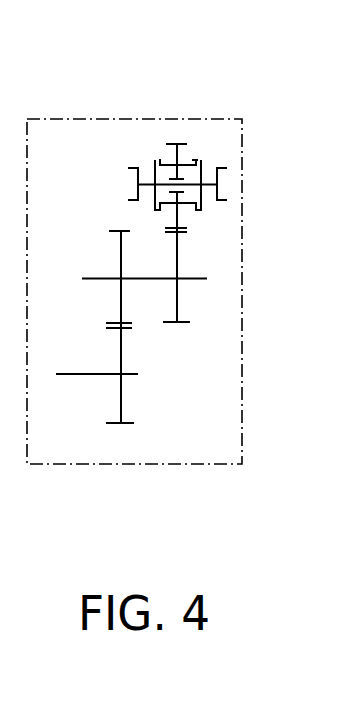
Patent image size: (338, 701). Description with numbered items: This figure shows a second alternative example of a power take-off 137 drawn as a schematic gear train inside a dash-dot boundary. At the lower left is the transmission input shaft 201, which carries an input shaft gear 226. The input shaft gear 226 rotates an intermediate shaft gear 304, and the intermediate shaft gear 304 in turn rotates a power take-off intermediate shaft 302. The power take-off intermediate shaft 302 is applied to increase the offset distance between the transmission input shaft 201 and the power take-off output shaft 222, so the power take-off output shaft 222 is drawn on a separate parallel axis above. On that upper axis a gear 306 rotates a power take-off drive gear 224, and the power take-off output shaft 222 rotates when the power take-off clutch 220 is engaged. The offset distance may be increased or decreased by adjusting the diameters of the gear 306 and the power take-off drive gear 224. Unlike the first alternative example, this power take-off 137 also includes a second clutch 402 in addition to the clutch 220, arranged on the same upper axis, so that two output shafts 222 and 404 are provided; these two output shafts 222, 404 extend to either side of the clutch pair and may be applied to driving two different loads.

The power take-off 137 is at (33, 118).
The second clutch 402 is at (140, 154).
The power take-off drive gear 224 is at (197, 137).
The power take-off clutch 220 is at (217, 157).
The power take-off output shaft 222 is at (231, 179).
The intermediate shaft gear 304 is at (104, 217).
The output shaft 404 is at (123, 183).
The power take-off intermediate shaft 302 is at (94, 261).
The gear 306 is at (201, 246).
The input shaft gear 226 is at (140, 340).
The transmission input shaft 201 is at (68, 374).